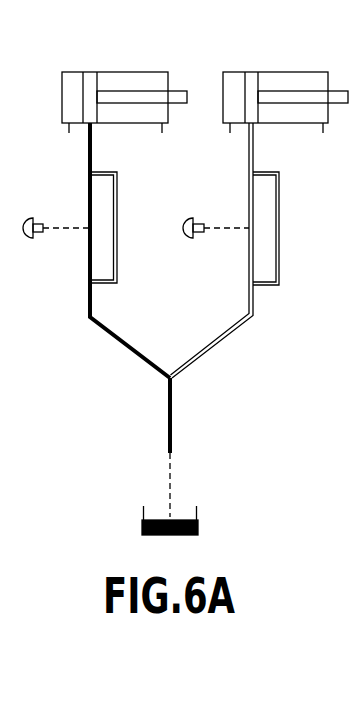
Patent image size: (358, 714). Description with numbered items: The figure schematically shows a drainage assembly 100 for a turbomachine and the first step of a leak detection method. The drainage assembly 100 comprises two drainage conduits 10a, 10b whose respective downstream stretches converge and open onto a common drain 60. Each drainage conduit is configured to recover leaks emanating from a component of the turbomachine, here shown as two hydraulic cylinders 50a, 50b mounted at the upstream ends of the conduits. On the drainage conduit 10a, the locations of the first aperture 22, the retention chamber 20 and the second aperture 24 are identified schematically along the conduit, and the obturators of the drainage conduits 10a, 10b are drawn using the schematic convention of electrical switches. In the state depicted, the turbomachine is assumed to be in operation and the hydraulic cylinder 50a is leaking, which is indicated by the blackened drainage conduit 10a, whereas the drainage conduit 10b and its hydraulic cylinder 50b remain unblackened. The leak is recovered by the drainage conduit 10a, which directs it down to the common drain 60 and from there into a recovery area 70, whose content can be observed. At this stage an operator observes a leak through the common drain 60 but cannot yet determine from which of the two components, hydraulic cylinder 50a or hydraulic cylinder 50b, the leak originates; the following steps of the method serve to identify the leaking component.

The drainage assembly 100 is at (267, 410).
The drainage conduit 10a is at (70, 299).
The drainage conduit 10b is at (270, 299).
The retention chamber 20 is at (88, 197).
The first aperture 22 is at (88, 170).
The second aperture 24 is at (88, 240).
The hydraulic cylinder 50a is at (122, 75).
The hydraulic cylinder 50b is at (289, 75).
The common drain 60 is at (172, 412).
The recovery area 70 is at (143, 520).